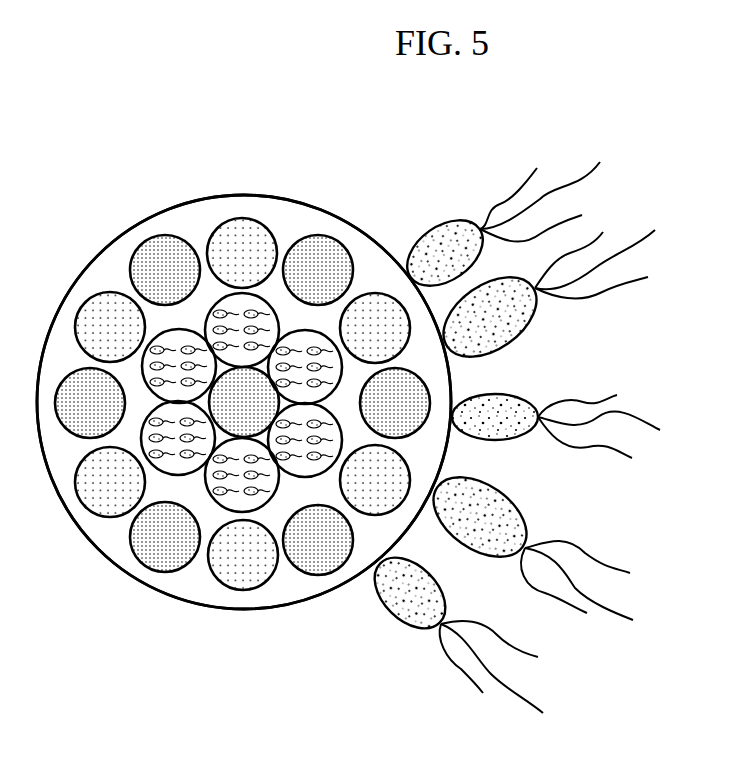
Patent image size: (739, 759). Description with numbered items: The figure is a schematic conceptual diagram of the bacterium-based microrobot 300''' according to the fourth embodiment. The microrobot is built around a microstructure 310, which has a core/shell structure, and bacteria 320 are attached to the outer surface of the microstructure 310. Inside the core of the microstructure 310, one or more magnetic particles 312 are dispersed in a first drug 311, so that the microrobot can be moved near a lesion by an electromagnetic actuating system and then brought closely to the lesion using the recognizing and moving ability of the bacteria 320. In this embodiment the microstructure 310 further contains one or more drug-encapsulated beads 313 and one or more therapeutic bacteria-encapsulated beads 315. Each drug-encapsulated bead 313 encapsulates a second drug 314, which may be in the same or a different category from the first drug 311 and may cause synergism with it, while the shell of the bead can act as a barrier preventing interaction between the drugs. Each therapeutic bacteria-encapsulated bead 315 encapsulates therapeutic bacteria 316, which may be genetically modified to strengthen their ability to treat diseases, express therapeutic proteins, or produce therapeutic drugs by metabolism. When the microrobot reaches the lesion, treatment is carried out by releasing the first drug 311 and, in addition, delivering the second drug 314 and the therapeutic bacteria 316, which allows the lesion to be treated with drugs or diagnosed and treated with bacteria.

The bacterium-based microrobot 300''' is at (236, 397).
The microstructure 310 is at (83, 267).
The first drug 311 is at (282, 220).
The magnetic particles 312 is at (330, 248).
The drug-encapsulated bead 313 is at (260, 590).
The second drug 314 is at (238, 567).
The therapeutic bacteria-encapsulated bead 315 is at (177, 475).
The therapeutic bacteria 316 is at (150, 463).
The bacteria 320 is at (527, 318).